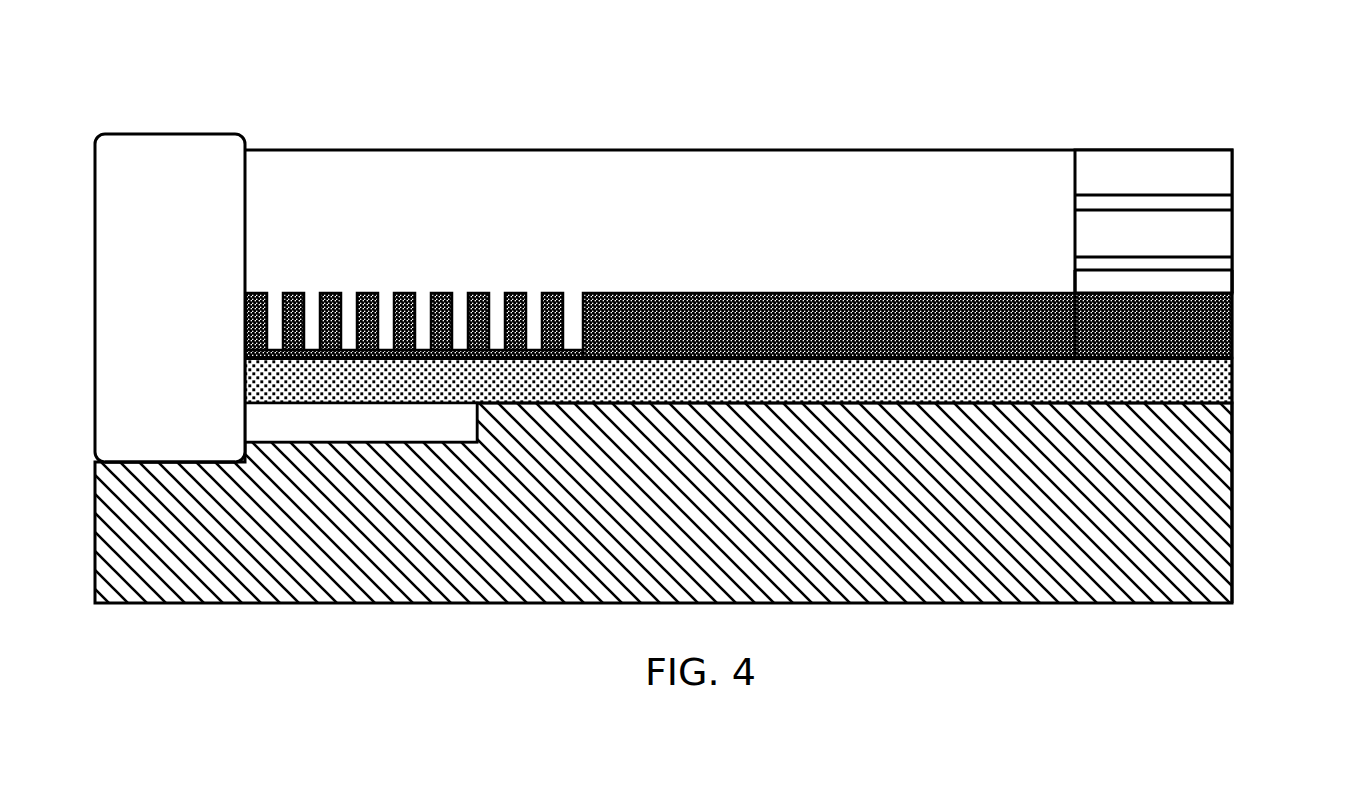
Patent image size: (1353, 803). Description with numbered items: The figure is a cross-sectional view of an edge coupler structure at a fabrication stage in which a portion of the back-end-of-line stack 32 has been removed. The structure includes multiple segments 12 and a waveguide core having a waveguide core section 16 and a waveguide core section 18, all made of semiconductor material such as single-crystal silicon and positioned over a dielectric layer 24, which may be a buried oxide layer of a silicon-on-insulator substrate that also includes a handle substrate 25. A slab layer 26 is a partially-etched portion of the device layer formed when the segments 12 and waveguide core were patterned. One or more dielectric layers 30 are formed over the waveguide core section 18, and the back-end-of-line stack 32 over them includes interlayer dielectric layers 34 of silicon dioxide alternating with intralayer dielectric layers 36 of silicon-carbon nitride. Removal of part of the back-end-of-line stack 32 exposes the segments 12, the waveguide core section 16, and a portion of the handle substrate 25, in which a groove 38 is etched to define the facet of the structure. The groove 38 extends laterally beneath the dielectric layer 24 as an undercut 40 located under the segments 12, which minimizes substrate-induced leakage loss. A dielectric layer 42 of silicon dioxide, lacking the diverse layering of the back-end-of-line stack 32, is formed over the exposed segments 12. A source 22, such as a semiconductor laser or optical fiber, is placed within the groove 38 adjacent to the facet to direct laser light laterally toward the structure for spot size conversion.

The segments 12 is at (332, 310).
The waveguide core section 16 is at (818, 338).
The waveguide core section 18 is at (1117, 340).
The source 22 is at (142, 160).
The dielectric layer 24 is at (1160, 385).
The handle substrate 25 is at (1160, 486).
The slab layer 26 is at (533, 353).
The dielectric layers 30 is at (1168, 280).
The back-end-of-line stack 32 is at (1192, 130).
The interlayer dielectric layers 34 is at (1162, 175).
The intralayer dielectric layers 36 is at (1168, 207).
The groove 38 is at (150, 465).
The undercut 40 is at (382, 436).
The dielectric layer 42 is at (633, 185).